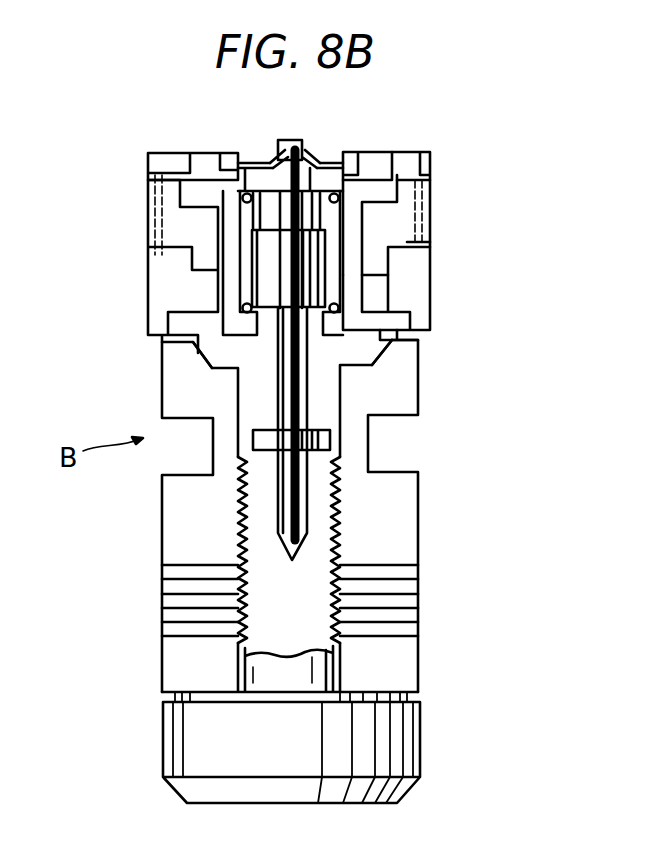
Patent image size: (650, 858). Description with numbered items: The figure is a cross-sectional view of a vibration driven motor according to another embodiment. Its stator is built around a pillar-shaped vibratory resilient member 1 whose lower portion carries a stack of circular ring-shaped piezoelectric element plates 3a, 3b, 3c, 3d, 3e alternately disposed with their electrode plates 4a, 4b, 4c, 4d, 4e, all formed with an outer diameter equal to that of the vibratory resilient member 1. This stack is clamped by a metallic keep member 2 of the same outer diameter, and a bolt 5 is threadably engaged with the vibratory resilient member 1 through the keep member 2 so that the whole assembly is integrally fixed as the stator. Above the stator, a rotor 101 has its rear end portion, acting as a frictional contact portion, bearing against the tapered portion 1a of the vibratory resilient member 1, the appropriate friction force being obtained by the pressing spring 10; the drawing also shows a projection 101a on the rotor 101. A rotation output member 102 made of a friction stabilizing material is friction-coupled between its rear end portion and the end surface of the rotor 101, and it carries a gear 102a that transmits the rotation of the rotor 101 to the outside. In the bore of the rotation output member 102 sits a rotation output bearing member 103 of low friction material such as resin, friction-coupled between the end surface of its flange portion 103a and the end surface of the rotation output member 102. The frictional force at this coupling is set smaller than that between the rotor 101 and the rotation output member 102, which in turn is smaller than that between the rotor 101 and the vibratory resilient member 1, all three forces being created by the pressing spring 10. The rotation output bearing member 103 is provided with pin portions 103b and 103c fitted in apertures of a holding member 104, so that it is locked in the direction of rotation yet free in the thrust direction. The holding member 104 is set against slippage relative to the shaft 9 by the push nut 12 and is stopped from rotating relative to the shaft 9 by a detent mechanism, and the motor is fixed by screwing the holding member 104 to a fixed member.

The vibratory resilient member 1 is at (400, 400).
The tapered portion 1a is at (395, 368).
The keep member 2 is at (405, 665).
The piezoelectric element plate 3a is at (410, 568).
The piezoelectric element plate 3b is at (410, 580).
The piezoelectric element plate 3c is at (408, 598).
The piezoelectric element plate 3d is at (408, 618).
The piezoelectric element plate 3e is at (408, 627).
The electrode plate 4a is at (162, 578).
The electrode plate 4b is at (162, 594).
The electrode plate 4c is at (162, 608).
The electrode plate 4d is at (162, 622).
The electrode plate 4e is at (162, 636).
The bolt 5 is at (187, 753).
The shaft 9 is at (275, 283).
The pressing spring 10 is at (245, 314).
The push nut 12 is at (310, 150).
The rotor 101 is at (412, 278).
The housing projection 101a is at (410, 355).
The rotation output member 102 is at (395, 218).
The gear 102a is at (427, 191).
The rotation output bearing member 103 is at (227, 226).
The flange portion 103a is at (180, 203).
The pin portion 103b is at (205, 168).
The pin portion 103c is at (375, 153).
The holding member 104 is at (418, 155).